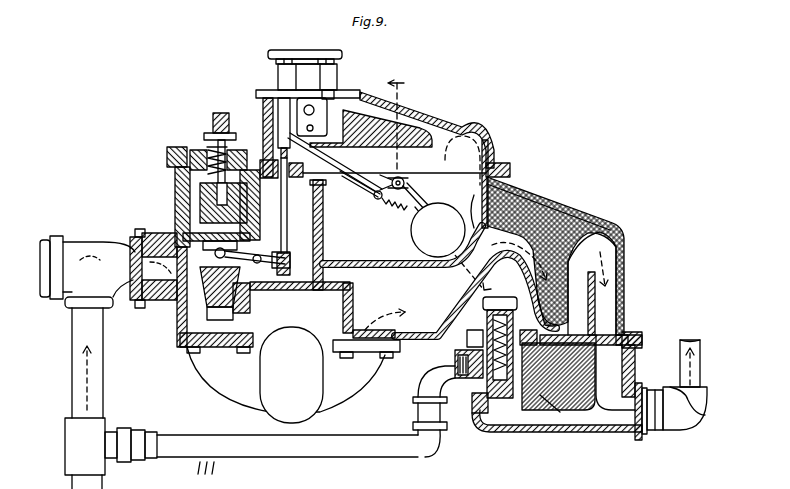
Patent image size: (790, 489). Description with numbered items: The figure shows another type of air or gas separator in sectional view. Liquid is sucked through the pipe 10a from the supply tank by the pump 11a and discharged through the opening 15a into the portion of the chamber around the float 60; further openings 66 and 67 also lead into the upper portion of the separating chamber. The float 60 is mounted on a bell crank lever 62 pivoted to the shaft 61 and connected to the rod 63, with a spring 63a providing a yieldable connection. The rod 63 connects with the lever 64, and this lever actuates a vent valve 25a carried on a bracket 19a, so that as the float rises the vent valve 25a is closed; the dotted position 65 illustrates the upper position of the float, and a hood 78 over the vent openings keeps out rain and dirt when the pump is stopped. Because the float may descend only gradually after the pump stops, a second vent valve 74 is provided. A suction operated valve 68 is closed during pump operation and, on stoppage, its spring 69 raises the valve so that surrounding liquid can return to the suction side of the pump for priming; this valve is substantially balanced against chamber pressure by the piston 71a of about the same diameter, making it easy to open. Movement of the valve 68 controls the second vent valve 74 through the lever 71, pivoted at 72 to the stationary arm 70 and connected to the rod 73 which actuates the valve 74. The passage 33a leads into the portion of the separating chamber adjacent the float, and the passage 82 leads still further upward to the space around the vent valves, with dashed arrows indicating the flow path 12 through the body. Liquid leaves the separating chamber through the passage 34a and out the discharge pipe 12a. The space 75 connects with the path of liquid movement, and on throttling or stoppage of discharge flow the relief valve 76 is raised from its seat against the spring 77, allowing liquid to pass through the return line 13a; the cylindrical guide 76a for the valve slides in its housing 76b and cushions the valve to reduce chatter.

The hood 78 is at (300, 52).
The second vent valve 74 is at (283, 100).
The lever 64 is at (286, 142).
The spring 69 is at (207, 155).
The bracket 19a is at (330, 72).
The vent valve 25a is at (332, 97).
The air passage 12 is at (498, 178).
The passage 82 is at (412, 126).
The dotted position of float 65 is at (472, 136).
The bell crank lever 62 is at (384, 178).
The shaft 61 is at (402, 179).
The rod 63 is at (357, 186).
The spring 63a is at (389, 211).
The float 60 is at (434, 220).
The opening 67 is at (470, 208).
The opening 66 is at (352, 260).
The passage 33a is at (535, 198).
The passage 34a is at (592, 283).
The opening 15a is at (428, 267).
The piston 71a is at (203, 217).
The lever 71 is at (193, 247).
The stationary arm 70 is at (263, 237).
The rod 73 is at (290, 258).
The pivot 72 is at (238, 293).
The suction operated valve 68 is at (227, 265).
The pump 11a is at (291, 375).
The pipe 10a is at (73, 363).
The return line 13a is at (218, 446).
The housing 76b is at (470, 330).
The spring 77 is at (455, 362).
The relief valve 76 is at (475, 395).
The space 75 is at (540, 412).
The cylindrical guide 76a is at (548, 412).
The discharge pipe 12a is at (700, 372).